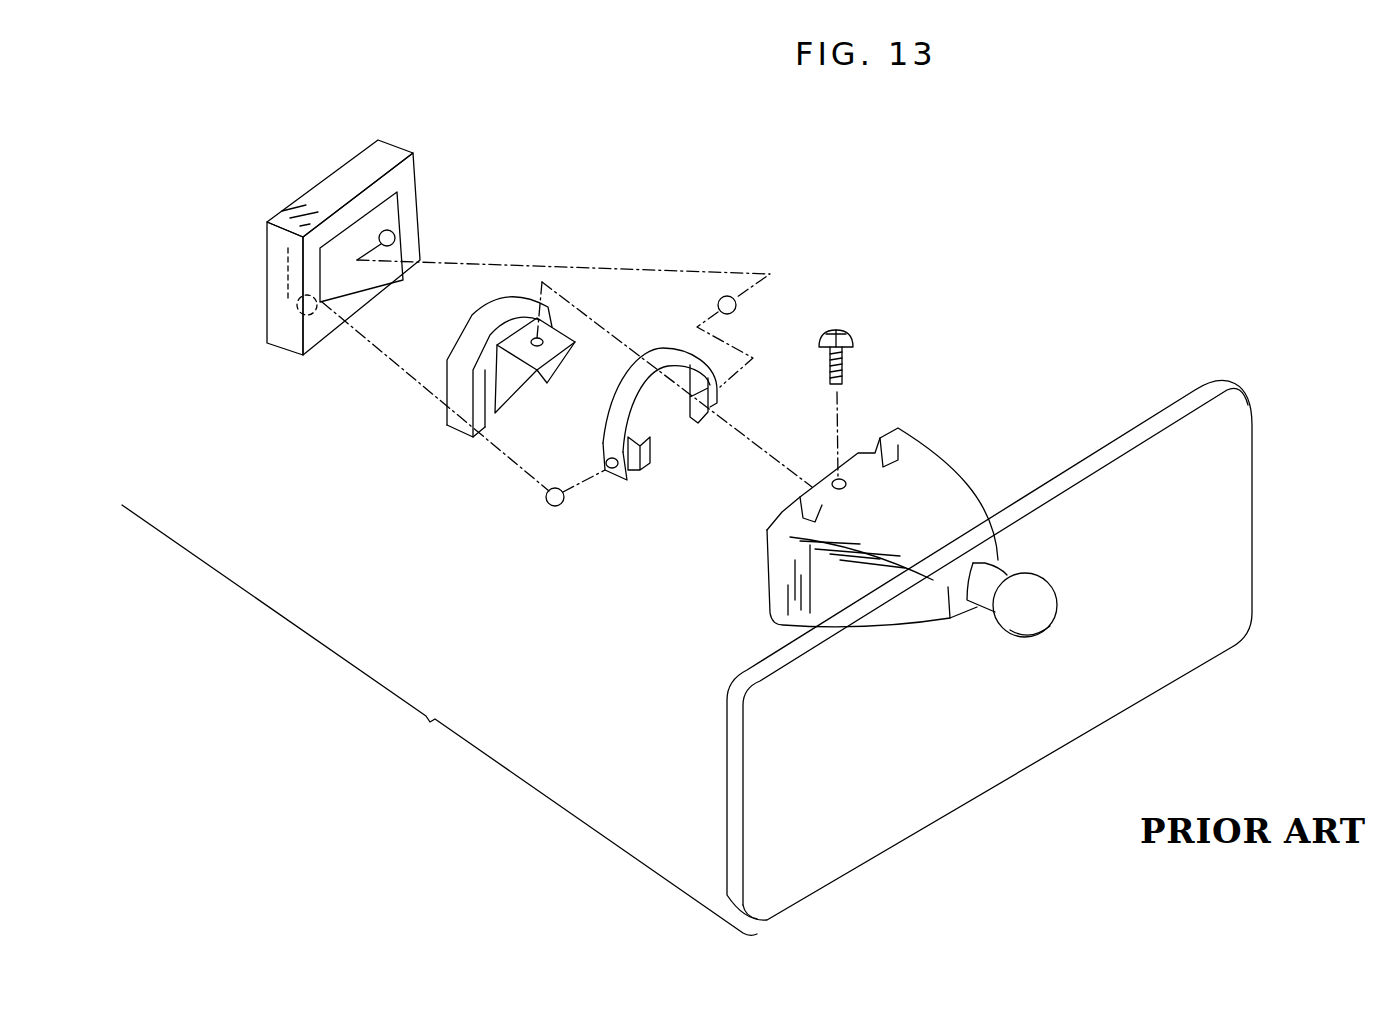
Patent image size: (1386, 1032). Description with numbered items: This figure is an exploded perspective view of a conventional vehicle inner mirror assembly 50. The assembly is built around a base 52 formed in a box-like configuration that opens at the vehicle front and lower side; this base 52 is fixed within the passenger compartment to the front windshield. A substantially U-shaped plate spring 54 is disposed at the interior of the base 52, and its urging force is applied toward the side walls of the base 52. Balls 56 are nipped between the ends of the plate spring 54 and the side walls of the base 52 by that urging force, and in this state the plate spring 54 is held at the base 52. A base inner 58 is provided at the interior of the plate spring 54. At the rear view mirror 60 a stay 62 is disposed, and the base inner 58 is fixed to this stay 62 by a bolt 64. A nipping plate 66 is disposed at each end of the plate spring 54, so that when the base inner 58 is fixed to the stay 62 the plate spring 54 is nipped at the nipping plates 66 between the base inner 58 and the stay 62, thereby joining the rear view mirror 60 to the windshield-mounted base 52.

The vehicle inner mirror assembly 50 is at (698, 157).
The base 52 is at (337, 182).
The plate spring 54 is at (660, 358).
The balls 56 is at (736, 303).
The base inner 58 is at (470, 342).
The rear view mirror 60 is at (1095, 385).
The stay 62 is at (953, 498).
The bolt 64 is at (856, 337).
The nipping plate 66 is at (640, 466).